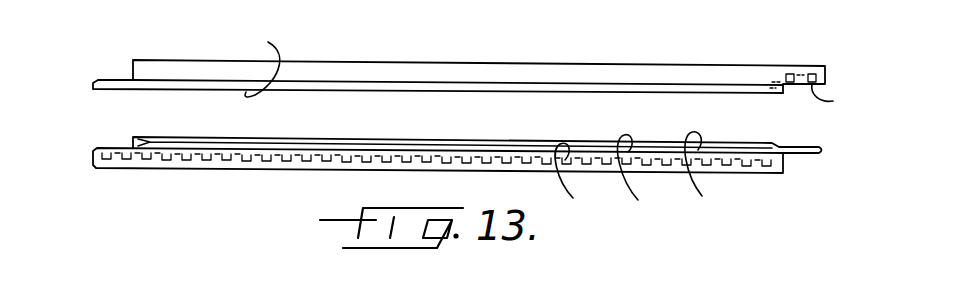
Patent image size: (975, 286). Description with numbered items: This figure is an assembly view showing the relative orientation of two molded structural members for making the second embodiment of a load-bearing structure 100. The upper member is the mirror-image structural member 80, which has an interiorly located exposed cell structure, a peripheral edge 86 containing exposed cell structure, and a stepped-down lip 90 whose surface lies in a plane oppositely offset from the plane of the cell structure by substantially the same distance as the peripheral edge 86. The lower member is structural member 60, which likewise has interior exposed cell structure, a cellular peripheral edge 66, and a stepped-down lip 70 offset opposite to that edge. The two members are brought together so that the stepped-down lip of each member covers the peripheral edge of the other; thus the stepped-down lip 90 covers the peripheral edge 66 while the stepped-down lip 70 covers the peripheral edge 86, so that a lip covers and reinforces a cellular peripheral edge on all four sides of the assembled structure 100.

The structure 100 is at (87, 197).
The structural member 80 is at (806, 60).
The peripheral edge 86 is at (818, 67).
The stepped-down lip 90 is at (112, 81).
The structural member 60 is at (814, 159).
The peripheral edge 66 is at (115, 170).
The stepped-down lip 70 is at (186, 148).